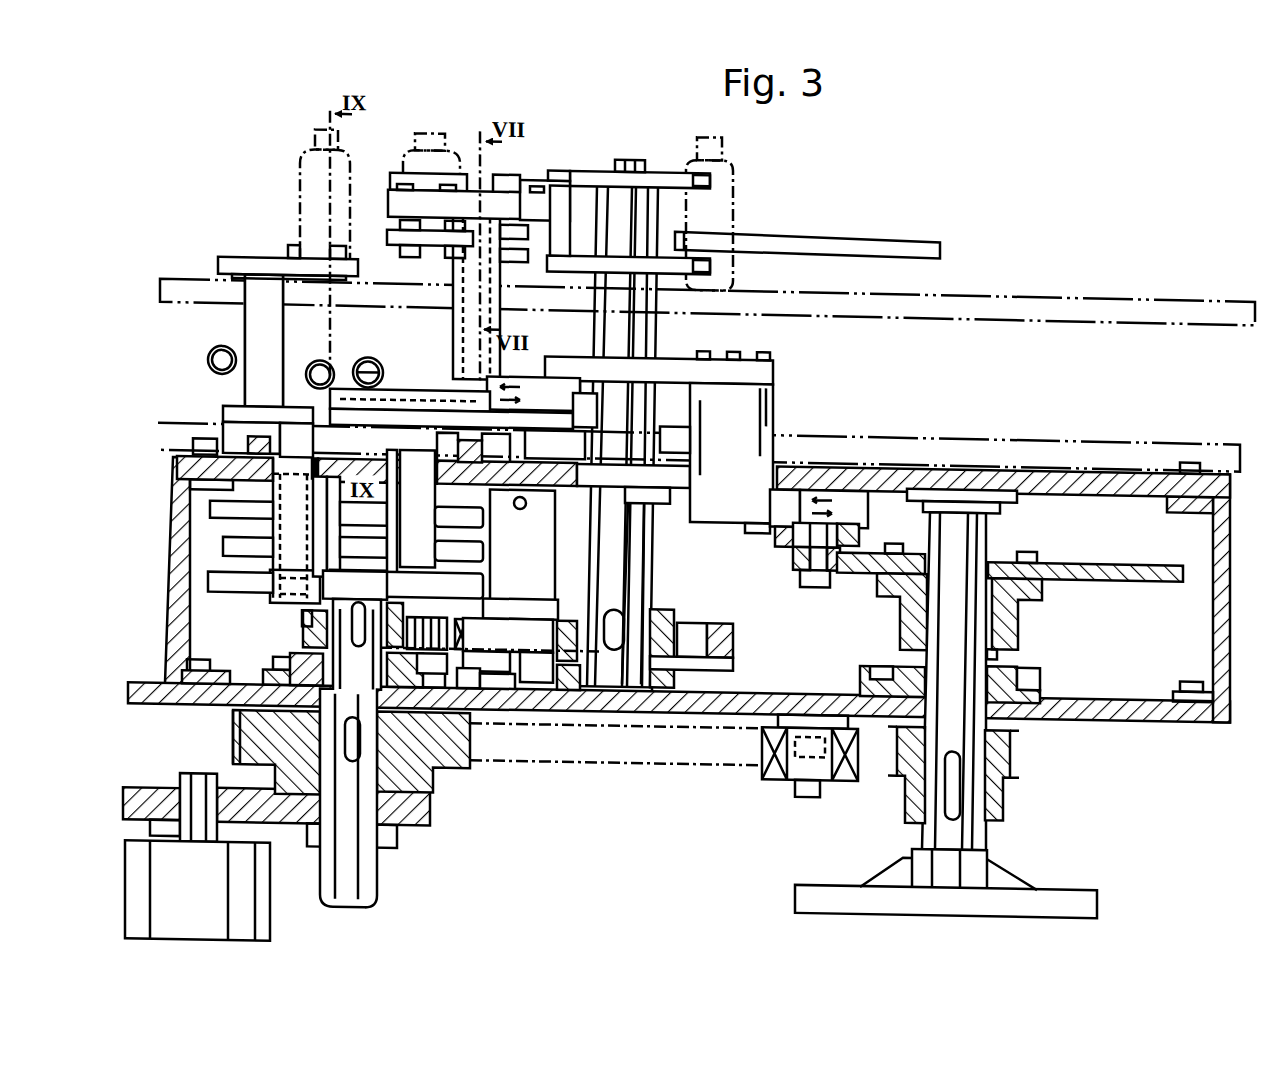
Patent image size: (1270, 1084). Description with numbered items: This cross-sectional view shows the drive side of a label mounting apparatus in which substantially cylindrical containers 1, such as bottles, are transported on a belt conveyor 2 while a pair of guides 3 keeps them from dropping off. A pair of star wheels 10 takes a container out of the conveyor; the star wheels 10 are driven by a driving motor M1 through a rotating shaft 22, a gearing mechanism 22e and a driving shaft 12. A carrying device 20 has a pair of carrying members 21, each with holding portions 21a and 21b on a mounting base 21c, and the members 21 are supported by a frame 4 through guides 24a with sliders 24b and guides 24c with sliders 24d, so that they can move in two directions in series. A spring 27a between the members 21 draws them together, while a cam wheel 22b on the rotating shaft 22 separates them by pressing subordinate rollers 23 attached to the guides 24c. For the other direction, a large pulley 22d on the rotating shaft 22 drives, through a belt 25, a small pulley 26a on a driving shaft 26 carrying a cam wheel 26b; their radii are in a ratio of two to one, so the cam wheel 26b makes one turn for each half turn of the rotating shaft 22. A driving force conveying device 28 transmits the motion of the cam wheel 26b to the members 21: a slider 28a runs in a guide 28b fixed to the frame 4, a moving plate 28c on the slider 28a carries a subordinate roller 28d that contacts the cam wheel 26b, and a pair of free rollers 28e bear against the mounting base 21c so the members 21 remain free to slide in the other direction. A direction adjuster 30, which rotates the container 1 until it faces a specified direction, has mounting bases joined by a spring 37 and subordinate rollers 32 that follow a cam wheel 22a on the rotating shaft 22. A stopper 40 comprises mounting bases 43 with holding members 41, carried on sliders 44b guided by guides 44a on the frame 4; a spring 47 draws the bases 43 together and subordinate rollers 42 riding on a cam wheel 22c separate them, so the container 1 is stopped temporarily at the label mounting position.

The container 1 is at (341, 178).
The belt conveyor 2 is at (1023, 311).
The guides 3 is at (865, 230).
The frame 4 is at (1070, 468).
The star wheels 10 is at (660, 168).
The driving shaft 12 is at (640, 584).
The carrying device 20 is at (535, 163).
The carrying members 21 is at (571, 221).
The holding portions 21a is at (570, 172).
The holding portions 21b is at (447, 174).
The mounting base 21c is at (768, 394).
The rotating shaft 22 is at (370, 871).
The cam wheel 22a is at (215, 508).
The cam wheel 22b is at (225, 548).
The cam wheel 22c is at (215, 588).
The large pulley 22d is at (450, 774).
The gearing mechanism 22e is at (490, 698).
The subordinate rollers 23 is at (300, 567).
The guides 24a is at (470, 440).
The sliders 24b is at (455, 364).
The guides 24c is at (575, 397).
The sliders 24d is at (547, 375).
The belt 25 is at (697, 760).
The driving shaft 26 is at (975, 810).
The small pulley 26a is at (1010, 747).
The cam wheel 26b is at (1077, 563).
The spring 27a is at (322, 363).
The driving force conveying device 28 is at (800, 583).
The slider 28a is at (838, 492).
The guide 28b is at (672, 500).
The moving plate 28c is at (858, 520).
The subordinate roller 28d is at (790, 563).
The free rollers 28e is at (790, 490).
The direction adjuster 30 is at (388, 238).
The subordinate rollers 32 is at (258, 520).
The spring 37 is at (369, 358).
The stopper 40 is at (245, 246).
The holding member 41 is at (265, 264).
The subordinate rollers 42 is at (296, 252).
The mounting bases 43 is at (228, 268).
The guides 44a is at (252, 453).
The sliders 44b is at (232, 410).
The spring 47 is at (210, 358).
The driving motor M1 is at (268, 937).